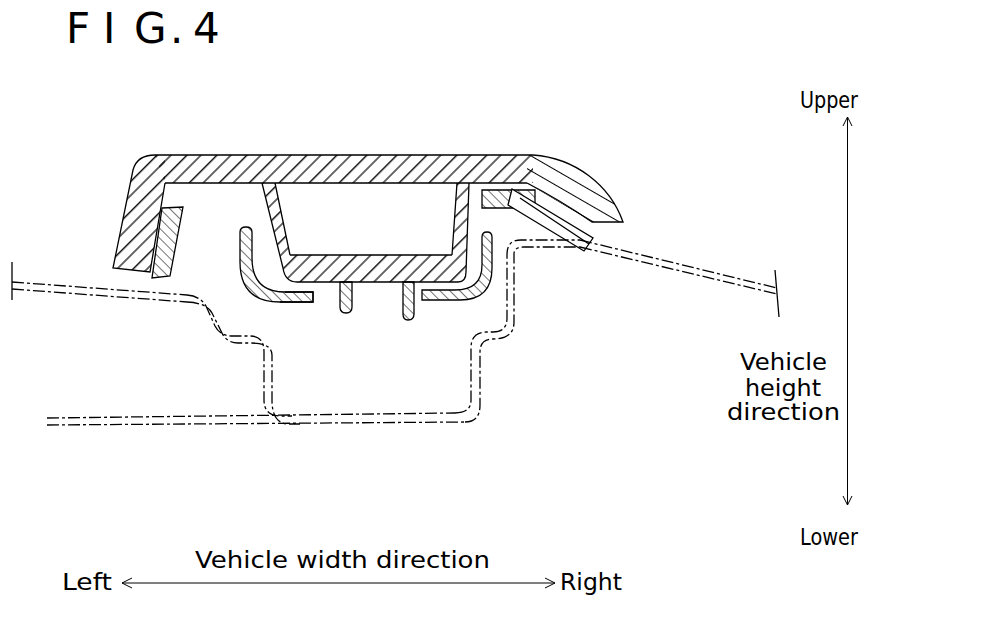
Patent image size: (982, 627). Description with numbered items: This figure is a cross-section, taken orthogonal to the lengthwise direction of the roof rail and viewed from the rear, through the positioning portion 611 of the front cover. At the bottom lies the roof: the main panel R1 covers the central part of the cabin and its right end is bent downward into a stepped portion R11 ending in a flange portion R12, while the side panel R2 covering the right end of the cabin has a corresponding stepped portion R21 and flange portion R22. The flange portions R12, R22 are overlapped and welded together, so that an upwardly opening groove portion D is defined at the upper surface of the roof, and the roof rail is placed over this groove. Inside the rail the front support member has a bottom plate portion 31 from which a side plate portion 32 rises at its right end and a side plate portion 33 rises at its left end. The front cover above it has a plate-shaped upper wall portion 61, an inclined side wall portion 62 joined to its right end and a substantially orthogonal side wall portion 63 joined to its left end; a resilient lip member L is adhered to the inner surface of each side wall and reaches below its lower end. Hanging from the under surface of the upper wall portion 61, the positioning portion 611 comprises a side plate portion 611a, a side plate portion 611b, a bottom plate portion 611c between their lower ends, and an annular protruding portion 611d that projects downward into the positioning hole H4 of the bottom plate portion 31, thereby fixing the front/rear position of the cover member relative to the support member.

The upper wall portion 61 is at (348, 154).
The side wall portion 62 is at (560, 168).
The side wall portion 63 is at (125, 200).
The positioning portion 611 is at (248, 218).
The side plate portion 611a is at (450, 232).
The side plate portion 611b is at (322, 210).
The bottom plate portion 611c is at (368, 256).
The protruding portion 611d is at (412, 320).
The bottom plate portion 31 is at (295, 303).
The side plate portion 32 is at (497, 272).
The side plate portion 33 is at (240, 258).
The main panel R1 is at (82, 282).
The stepped portion R11 is at (212, 338).
The flange portion R12 is at (347, 412).
The side panel R2 is at (650, 248).
The stepped portion R21 is at (478, 357).
The flange portion R22 is at (418, 426).
The lip member L is at (183, 240).
The groove portion D is at (282, 326).
The positioning hole H4 is at (369, 319).